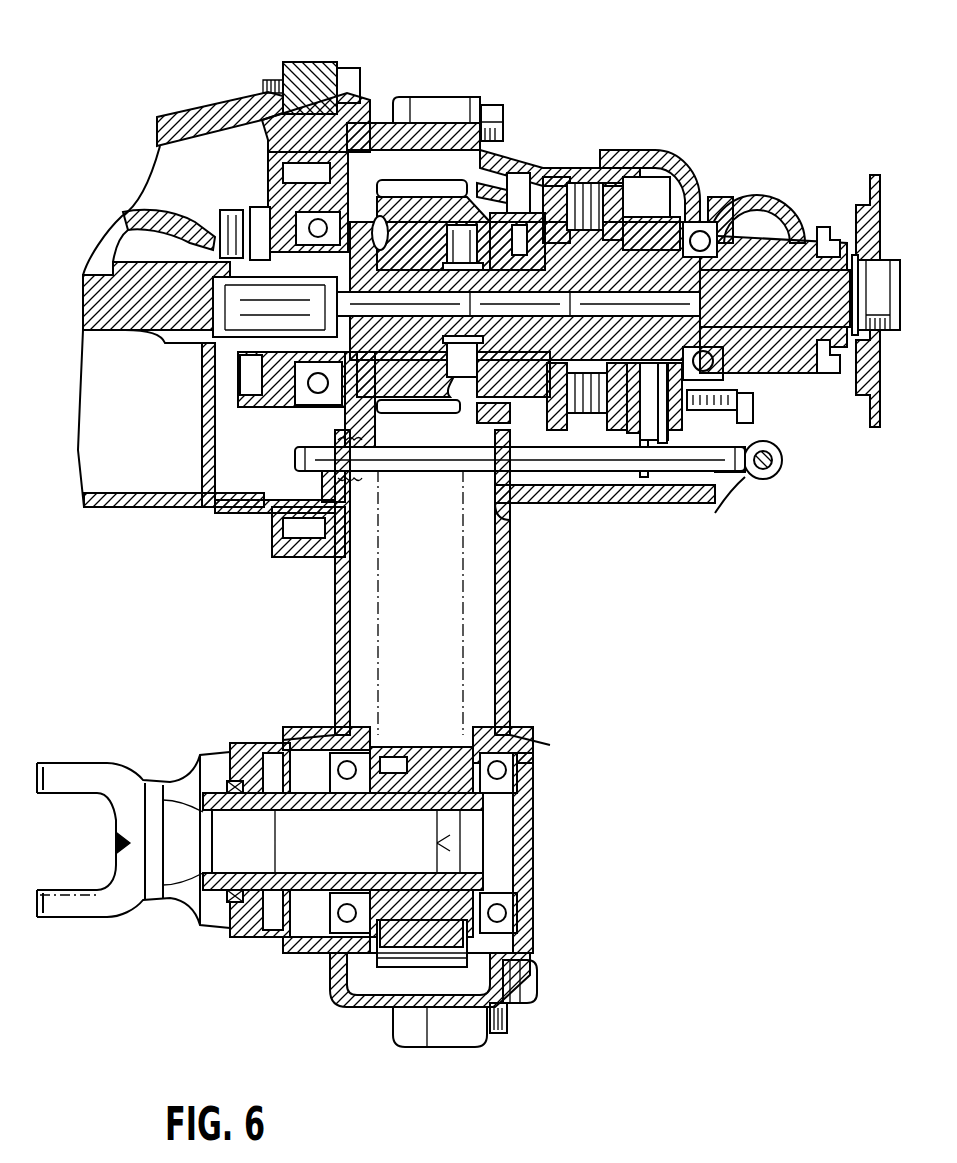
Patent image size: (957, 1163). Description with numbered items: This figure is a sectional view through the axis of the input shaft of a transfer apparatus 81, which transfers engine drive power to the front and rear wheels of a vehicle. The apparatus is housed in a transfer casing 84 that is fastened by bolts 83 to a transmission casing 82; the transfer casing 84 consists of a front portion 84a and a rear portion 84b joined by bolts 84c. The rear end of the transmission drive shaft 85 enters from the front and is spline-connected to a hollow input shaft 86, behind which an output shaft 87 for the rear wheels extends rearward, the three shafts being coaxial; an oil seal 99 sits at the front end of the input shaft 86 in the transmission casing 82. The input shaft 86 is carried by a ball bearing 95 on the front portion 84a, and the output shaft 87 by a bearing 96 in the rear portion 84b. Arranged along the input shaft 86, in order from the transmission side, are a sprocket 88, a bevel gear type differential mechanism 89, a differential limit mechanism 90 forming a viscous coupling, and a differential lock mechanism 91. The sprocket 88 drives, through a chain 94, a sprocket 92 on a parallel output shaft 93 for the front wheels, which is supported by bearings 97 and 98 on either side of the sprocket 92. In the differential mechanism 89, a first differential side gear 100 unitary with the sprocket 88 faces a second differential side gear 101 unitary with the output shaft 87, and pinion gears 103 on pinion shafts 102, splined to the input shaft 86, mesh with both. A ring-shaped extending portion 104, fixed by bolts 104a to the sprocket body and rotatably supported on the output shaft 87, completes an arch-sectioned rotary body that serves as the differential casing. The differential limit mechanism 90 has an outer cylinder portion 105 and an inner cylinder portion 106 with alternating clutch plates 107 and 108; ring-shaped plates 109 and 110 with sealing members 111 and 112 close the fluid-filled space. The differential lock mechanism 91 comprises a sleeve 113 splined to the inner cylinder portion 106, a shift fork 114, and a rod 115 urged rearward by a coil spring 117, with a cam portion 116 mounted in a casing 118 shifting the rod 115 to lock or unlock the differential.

The transfer apparatus 81 is at (792, 107).
The transmission casing 82 is at (212, 125).
The bolts 83 is at (345, 62).
The transfer casing 84 is at (403, 122).
The front portion 84a is at (400, 125).
The rear portion 84b is at (535, 165).
The bolts 84c is at (498, 103).
The drive shaft 85 is at (110, 330).
The input shaft 86 is at (170, 350).
The output shaft 87 is at (843, 257).
The sprocket 88 is at (345, 150).
The differential mechanism 89 is at (468, 176).
The differential limit mechanism 90 is at (645, 195).
The differential lock mechanism 91 is at (649, 403).
The sprocket 92 is at (440, 725).
The output shaft 93 is at (243, 935).
The chain 94 is at (443, 967).
The bearing 95 is at (285, 405).
The bearing 96 is at (715, 357).
The bearing 97 is at (297, 955).
The bearing 98 is at (520, 905).
The oil seal 99 is at (200, 410).
The first differential side gear 100 is at (372, 413).
The second differential side gear 101 is at (400, 375).
The pinion shafts 102 is at (400, 372).
The pinion gears 103 is at (345, 540).
The extending portion 104 is at (565, 212).
The bolts 104a is at (545, 190).
The outer cylinder portion 105 is at (632, 180).
The inner cylinder portion 106 is at (705, 225).
The clutch plates 107 is at (665, 182).
The clutch plates 108 is at (610, 472).
The plate 109 is at (562, 232).
The plate 110 is at (680, 237).
The sealing member 111 is at (463, 480).
The sealing member 112 is at (648, 478).
The sleeve 113 is at (700, 220).
The shift fork 114 is at (722, 498).
The rod 115 is at (395, 480).
The cam portion 116 is at (785, 475).
The coil spring 117 is at (325, 488).
The casing 118 is at (785, 450).